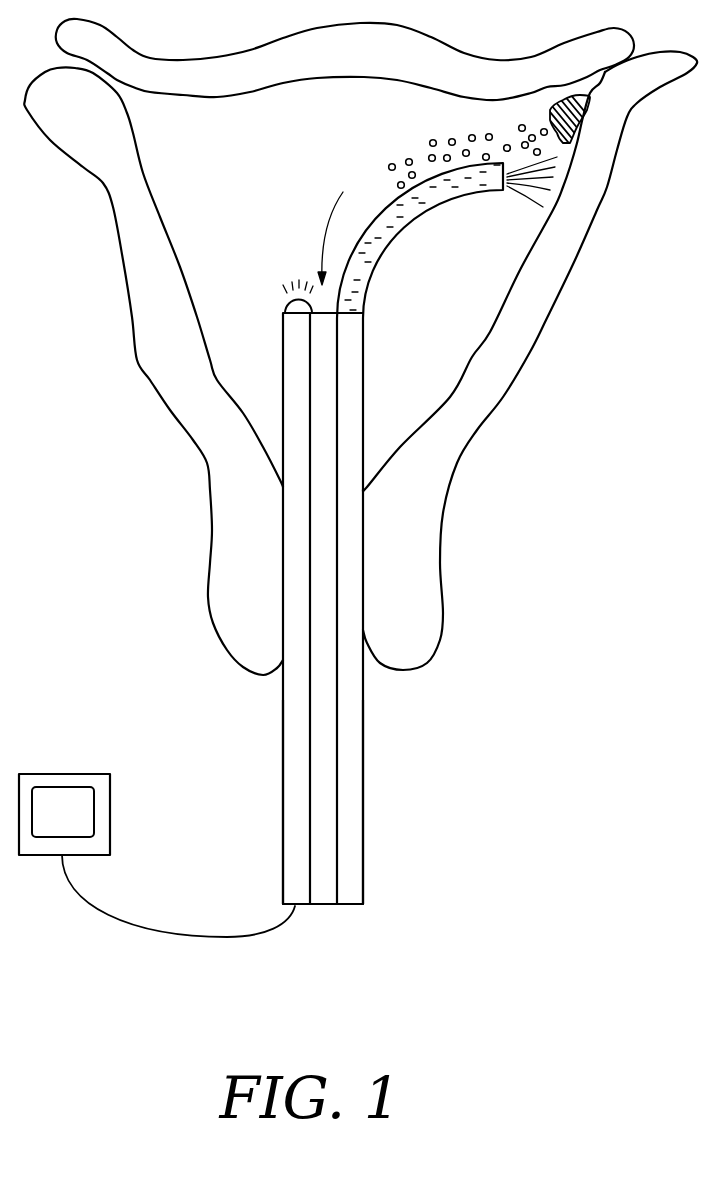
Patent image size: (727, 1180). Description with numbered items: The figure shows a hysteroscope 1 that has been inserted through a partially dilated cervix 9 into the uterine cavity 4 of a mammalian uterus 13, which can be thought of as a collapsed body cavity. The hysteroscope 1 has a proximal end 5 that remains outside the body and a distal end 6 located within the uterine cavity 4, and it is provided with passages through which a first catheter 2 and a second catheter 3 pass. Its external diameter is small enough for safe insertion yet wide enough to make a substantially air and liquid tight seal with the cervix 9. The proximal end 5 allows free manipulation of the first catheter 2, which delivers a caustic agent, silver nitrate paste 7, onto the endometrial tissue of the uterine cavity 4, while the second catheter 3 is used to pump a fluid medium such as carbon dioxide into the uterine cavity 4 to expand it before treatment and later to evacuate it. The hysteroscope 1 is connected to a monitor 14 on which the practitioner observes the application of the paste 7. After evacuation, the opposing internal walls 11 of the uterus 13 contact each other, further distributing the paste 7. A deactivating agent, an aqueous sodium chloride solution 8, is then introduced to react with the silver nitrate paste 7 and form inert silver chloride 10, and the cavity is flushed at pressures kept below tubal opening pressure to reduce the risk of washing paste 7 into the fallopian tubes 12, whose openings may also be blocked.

The hysteroscope 1 is at (283, 363).
The first catheter 2 is at (433, 205).
The second catheter 3 is at (320, 906).
The uterine cavity 4 is at (343, 123).
The proximal end 5 is at (363, 890).
The distal end 6 is at (283, 320).
The caustic paste 7 is at (547, 112).
The deactivating agent 8 is at (377, 232).
The cervix 9 is at (368, 653).
The silver chloride 10 is at (410, 161).
The internal walls 11 is at (160, 215).
The fallopian tubes 12 is at (610, 67).
The uterus 13 is at (530, 350).
The monitor 14 is at (110, 815).